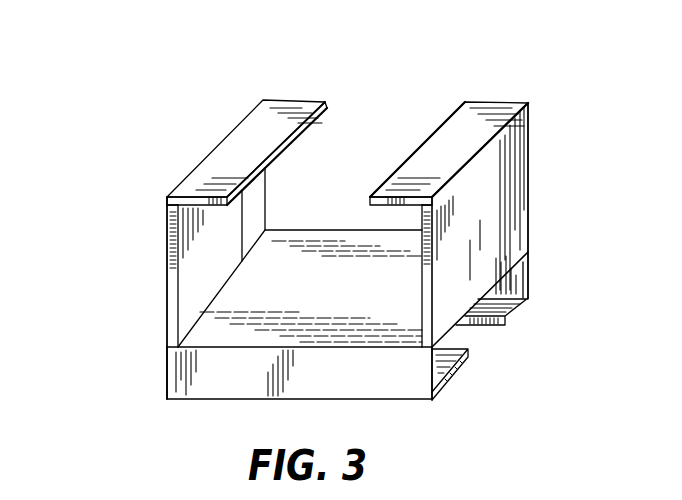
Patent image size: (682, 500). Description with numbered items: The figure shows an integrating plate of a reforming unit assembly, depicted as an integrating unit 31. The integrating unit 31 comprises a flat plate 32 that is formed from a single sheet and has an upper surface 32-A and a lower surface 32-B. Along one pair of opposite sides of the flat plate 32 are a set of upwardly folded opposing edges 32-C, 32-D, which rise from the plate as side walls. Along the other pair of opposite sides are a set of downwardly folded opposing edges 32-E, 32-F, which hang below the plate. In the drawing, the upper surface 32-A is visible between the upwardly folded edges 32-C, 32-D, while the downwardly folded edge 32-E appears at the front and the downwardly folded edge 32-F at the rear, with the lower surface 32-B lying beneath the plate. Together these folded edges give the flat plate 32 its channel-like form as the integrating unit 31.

The integrating unit 31 is at (492, 71).
The flat plate 32 is at (155, 352).
The upper surface 32-A is at (306, 232).
The lower surface 32-B is at (446, 333).
The upwardly folded edge 32-C is at (200, 258).
The upwardly folded edge 32-D is at (512, 184).
The downwardly folded edge 32-E is at (231, 380).
The downwardly folded edge 32-F is at (510, 275).